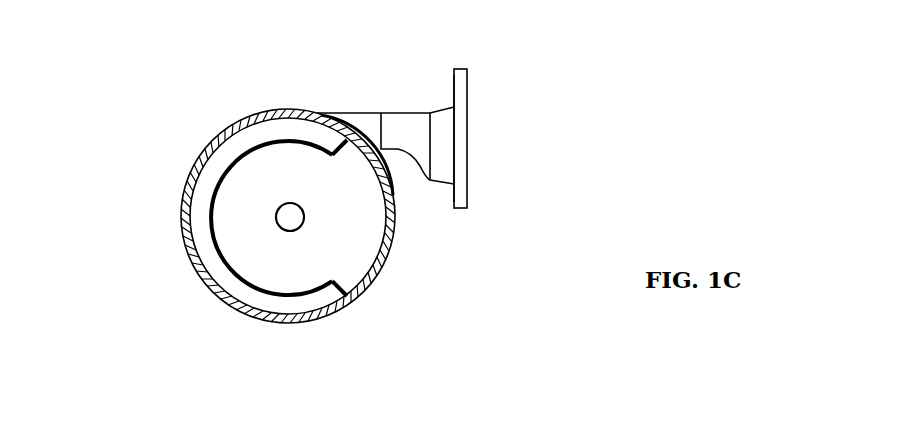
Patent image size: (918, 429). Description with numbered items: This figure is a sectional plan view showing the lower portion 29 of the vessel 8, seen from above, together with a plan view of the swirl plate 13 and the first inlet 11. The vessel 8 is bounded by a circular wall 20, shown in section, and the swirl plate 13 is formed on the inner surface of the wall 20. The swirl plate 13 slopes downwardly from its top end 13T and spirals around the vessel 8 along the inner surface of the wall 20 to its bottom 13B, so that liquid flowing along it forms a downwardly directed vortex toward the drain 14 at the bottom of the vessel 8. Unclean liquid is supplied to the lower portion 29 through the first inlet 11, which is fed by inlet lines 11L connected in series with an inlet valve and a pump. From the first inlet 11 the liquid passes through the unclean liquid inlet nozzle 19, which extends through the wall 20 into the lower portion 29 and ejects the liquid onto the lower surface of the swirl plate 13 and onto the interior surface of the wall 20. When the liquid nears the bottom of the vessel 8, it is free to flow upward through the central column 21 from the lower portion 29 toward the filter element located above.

The vessel 8 is at (109, 247).
The lower portion 29 is at (137, 162).
The wall 20 is at (299, 110).
The swirl plate 13 is at (278, 127).
The top end of swirl plate 13T is at (358, 168).
The bottom of swirl plate 13B is at (361, 275).
The drain 14 is at (267, 194).
The central column 21 is at (345, 227).
The unclean liquid inlet nozzle 19 is at (373, 87).
The first inlet 11 is at (467, 73).
The inlet lines 11L is at (480, 140).